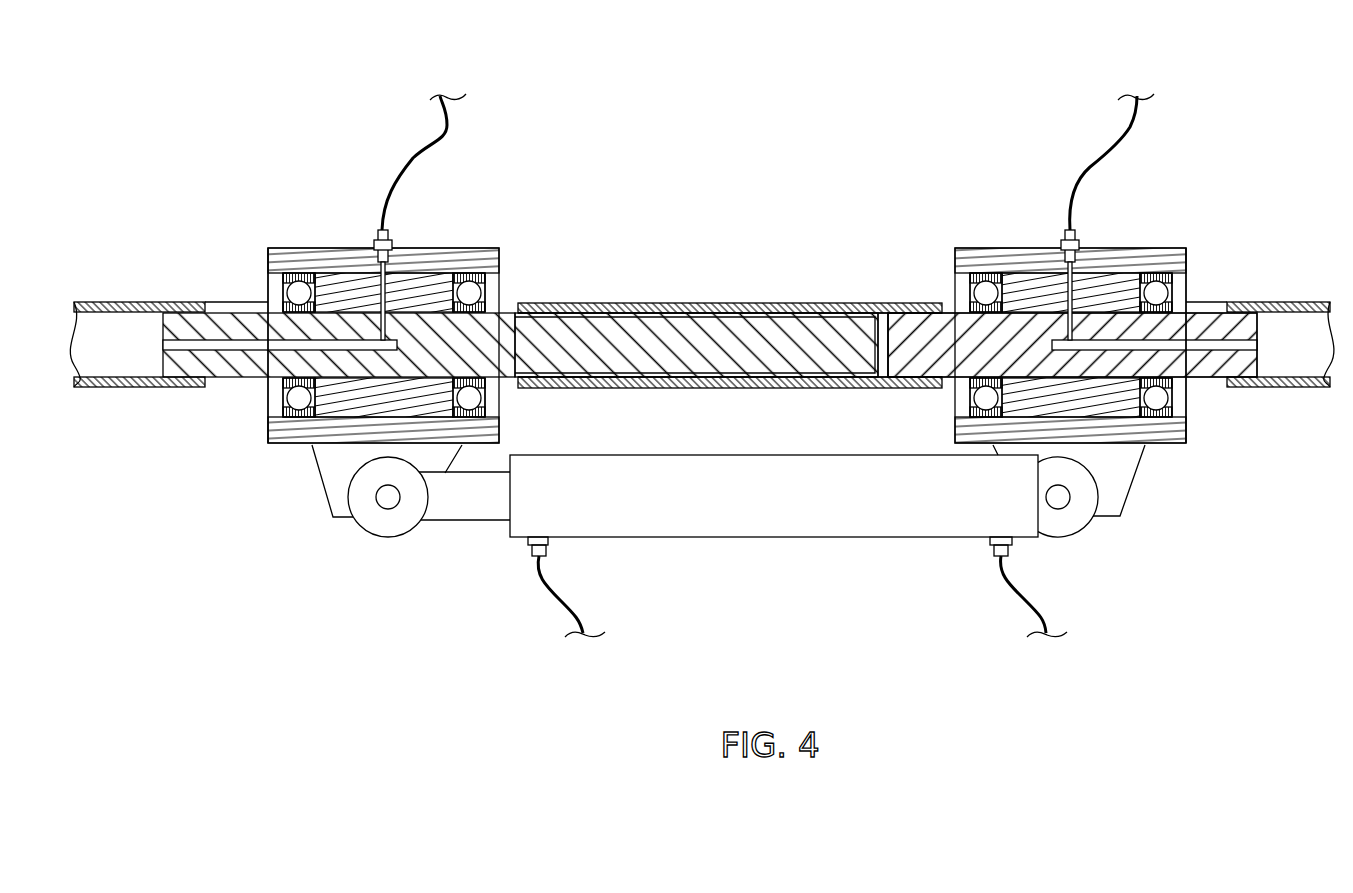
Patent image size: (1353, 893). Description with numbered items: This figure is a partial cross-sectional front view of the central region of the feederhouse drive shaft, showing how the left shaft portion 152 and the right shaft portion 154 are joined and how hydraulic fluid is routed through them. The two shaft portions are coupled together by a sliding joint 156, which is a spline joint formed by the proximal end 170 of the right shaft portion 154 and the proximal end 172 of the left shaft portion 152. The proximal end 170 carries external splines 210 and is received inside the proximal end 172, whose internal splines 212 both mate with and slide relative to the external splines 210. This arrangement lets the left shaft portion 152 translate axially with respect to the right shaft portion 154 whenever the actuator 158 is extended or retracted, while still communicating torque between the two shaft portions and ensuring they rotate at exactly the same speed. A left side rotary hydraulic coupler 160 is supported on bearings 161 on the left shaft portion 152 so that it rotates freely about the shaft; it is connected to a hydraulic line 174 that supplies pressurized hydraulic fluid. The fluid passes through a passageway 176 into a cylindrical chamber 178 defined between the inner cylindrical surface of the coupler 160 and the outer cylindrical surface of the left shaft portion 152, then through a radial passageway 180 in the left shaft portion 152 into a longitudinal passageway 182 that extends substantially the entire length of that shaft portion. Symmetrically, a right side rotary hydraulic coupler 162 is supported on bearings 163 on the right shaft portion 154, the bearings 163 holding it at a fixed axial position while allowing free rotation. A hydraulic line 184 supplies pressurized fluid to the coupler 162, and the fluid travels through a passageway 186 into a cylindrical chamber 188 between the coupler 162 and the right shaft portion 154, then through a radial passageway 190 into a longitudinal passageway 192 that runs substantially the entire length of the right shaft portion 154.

The left shaft portion 152 is at (1265, 160).
The right shaft portion 154 is at (217, 127).
The sliding joint 156 is at (657, 245).
The actuator 158 is at (722, 540).
The left side rotary hydraulic coupler 160 is at (968, 248).
The bearings 161 is at (975, 290).
The right side rotary hydraulic coupler 162 is at (490, 248).
The bearings 163 is at (306, 280).
The proximal end of the right shaft portion 170 is at (790, 340).
The proximal end of the left shaft portion 172 is at (865, 303).
The hydraulic line 174 is at (1092, 167).
The passageway 176 is at (1080, 282).
The cylindrical chamber 178 is at (1037, 309).
The radial passageway 180 is at (1078, 318).
The longitudinal passageway 182 is at (1200, 311).
The hydraulic line 184 is at (447, 125).
The passageway 186 is at (346, 283).
The cylindrical chamber 188 is at (355, 309).
The radial passageway 190 is at (388, 318).
The longitudinal passageway 192 is at (229, 338).
The external splines 210 is at (590, 304).
The internal splines 212 is at (617, 322).